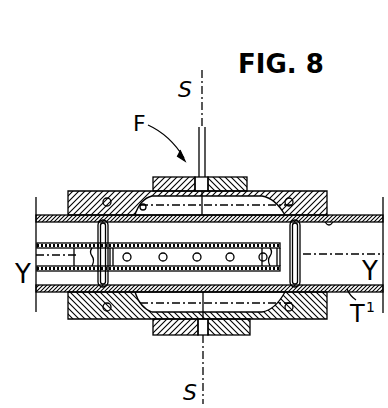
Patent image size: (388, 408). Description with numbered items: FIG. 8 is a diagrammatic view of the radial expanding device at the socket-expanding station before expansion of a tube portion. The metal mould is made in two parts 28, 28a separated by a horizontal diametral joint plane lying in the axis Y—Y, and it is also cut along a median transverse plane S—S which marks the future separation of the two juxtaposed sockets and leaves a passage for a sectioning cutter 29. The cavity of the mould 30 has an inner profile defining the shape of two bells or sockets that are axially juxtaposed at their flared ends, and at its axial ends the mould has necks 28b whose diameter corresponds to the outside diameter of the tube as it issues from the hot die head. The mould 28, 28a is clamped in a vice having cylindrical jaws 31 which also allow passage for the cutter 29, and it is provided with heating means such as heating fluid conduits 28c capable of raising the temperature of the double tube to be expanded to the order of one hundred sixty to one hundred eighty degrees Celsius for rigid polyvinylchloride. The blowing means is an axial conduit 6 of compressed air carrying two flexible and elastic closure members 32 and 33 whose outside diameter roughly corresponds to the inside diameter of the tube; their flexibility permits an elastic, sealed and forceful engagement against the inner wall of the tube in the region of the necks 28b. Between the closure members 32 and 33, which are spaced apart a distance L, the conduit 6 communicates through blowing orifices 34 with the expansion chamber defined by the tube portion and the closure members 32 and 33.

The axial conduit 6 is at (35, 241).
The mould part 28 is at (73, 318).
The mould part 28a is at (82, 200).
The necks 28b is at (331, 215).
The heating fluid conduits 28c is at (289, 191).
The sectioning cutter 29 is at (205, 144).
The cavity of the mould 30 is at (141, 205).
The cylindrical jaws 31 is at (199, 176).
The closure member 32 is at (99, 236).
The closure member 33 is at (301, 246).
The blowing orifices 34 is at (170, 272).